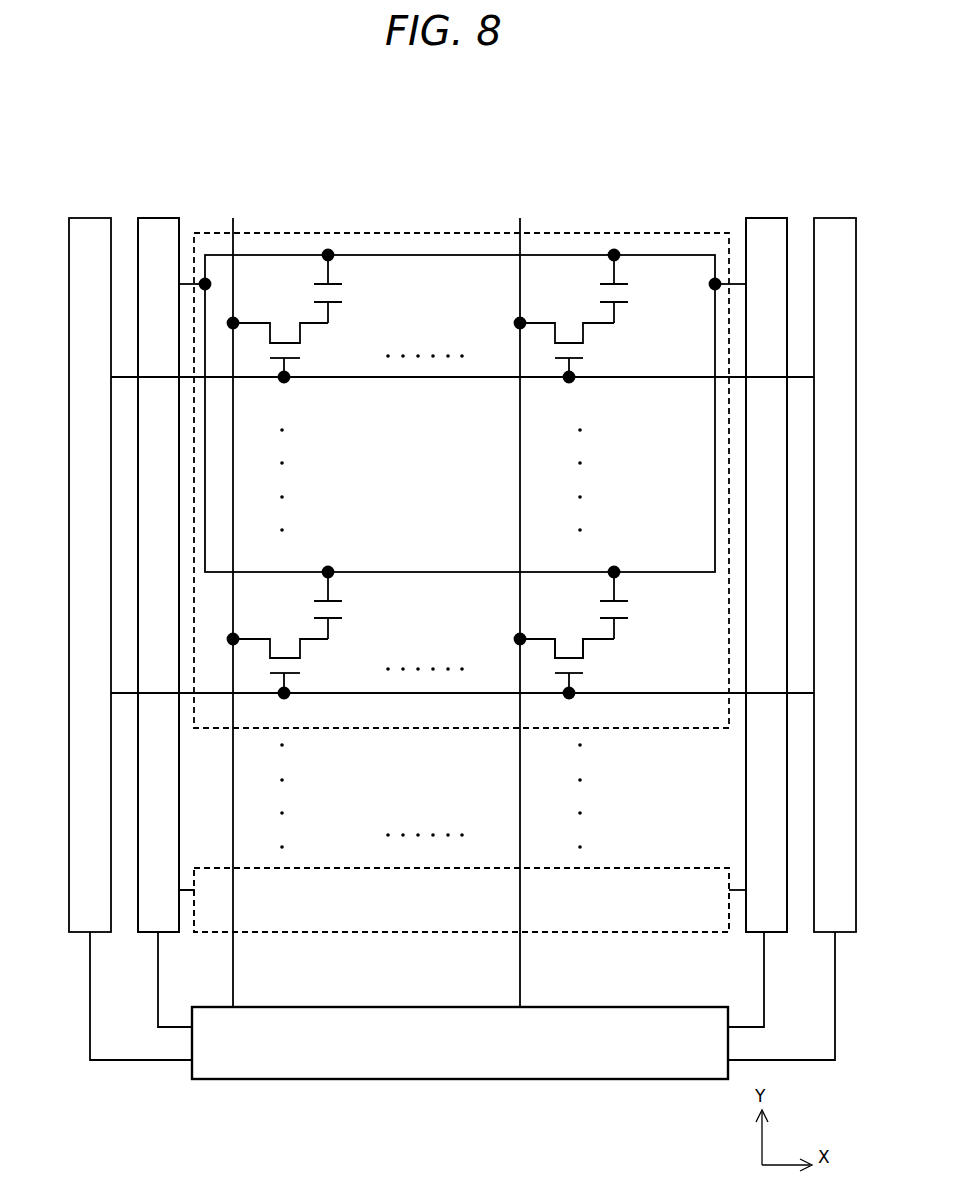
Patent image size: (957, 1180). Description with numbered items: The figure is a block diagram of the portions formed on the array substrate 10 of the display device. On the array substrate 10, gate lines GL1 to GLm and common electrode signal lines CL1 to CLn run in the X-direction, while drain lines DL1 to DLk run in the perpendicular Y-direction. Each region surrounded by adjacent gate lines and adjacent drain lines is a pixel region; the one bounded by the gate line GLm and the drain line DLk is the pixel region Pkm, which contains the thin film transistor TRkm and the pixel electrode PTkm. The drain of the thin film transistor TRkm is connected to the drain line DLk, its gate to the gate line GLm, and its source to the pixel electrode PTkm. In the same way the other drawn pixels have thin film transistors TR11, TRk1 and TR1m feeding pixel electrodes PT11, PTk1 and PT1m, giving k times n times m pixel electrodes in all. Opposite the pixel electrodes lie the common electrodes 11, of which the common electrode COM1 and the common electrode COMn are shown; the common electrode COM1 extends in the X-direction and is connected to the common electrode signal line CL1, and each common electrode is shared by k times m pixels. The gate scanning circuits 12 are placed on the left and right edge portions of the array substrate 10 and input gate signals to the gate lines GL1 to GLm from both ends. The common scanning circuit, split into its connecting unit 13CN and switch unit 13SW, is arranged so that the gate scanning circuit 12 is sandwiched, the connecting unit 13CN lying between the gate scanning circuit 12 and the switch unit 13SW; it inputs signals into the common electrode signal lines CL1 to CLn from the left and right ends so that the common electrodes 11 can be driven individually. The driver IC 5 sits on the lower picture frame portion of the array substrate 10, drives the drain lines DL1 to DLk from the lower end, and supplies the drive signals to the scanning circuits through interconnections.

The array substrate 10 is at (480, 113).
The common electrode 11 is at (598, 233).
The gate scanning circuit 12 is at (90, 218).
The connecting unit 13CN is at (767, 218).
The switch unit 13SW is at (462, 545).
The driver IC 5 is at (435, 1081).
The drain line DL1 is at (233, 993).
The drain line DLk is at (520, 993).
The gate line GL1 is at (385, 380).
The gate line GLm is at (385, 695).
The common electrode signal line CL1 is at (186, 284).
The common electrode signal line CLn is at (187, 893).
The common electrode COM1 is at (460, 413).
The common electrode COMn is at (461, 900).
The thin film transistor TR11 is at (282, 330).
The thin film transistor TRk1 is at (568, 330).
The thin film transistor TR1m is at (282, 640).
The thin film transistor TRkm is at (568, 645).
The pixel electrode PT11 is at (333, 327).
The pixel electrode PTk1 is at (618, 327).
The pixel electrode PT1m is at (333, 643).
The pixel electrode PTkm is at (618, 643).
The pixel region Pkm is at (660, 690).